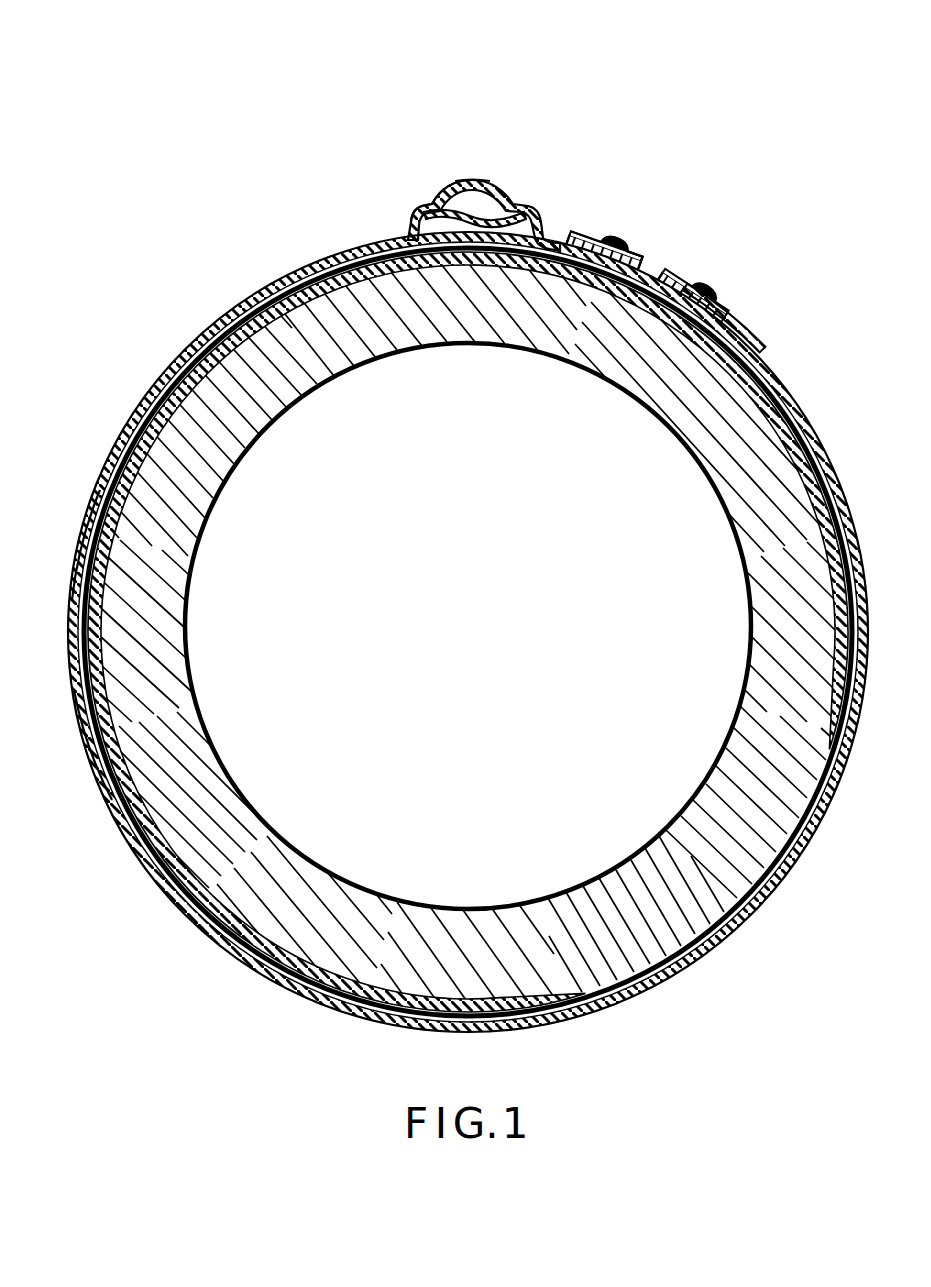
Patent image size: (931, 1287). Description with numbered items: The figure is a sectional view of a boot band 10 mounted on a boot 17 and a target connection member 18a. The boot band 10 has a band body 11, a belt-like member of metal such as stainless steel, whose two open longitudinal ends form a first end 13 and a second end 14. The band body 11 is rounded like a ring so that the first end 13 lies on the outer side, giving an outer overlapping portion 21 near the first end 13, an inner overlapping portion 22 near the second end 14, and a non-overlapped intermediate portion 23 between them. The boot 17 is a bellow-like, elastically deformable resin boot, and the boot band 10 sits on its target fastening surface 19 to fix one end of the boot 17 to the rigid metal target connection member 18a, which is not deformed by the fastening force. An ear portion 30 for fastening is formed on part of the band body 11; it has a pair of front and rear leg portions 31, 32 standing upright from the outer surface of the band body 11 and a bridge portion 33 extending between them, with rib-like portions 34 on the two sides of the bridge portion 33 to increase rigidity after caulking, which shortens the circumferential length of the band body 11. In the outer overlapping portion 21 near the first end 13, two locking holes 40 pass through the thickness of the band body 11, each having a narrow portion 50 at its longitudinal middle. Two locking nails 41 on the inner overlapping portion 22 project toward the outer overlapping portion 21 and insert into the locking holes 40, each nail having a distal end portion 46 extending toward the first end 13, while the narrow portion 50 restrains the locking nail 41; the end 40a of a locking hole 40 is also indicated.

The boot band 10 is at (183, 100).
The band body 11 is at (787, 395).
The first end 13 is at (766, 344).
The second end 14 is at (288, 265).
The boot 17 is at (238, 327).
The target connection member 18a is at (708, 455).
The target fastening surface 19 is at (127, 427).
The outer overlapping portion 21 is at (350, 244).
The inner overlapping portion 22 is at (498, 228).
The intermediate portion 23 is at (90, 775).
The ear portion 30 is at (517, 200).
The front leg portion 31 is at (417, 235).
The rear leg portion 32 is at (542, 237).
The bridge portion 33 is at (452, 198).
The rib-like portions 34 is at (482, 193).
The locking holes 40 is at (575, 246).
The fixing plate end 40a is at (588, 262).
The locking nails 41 is at (620, 243).
The distal end portion 46 is at (637, 255).
The narrow portion 50 is at (602, 246).